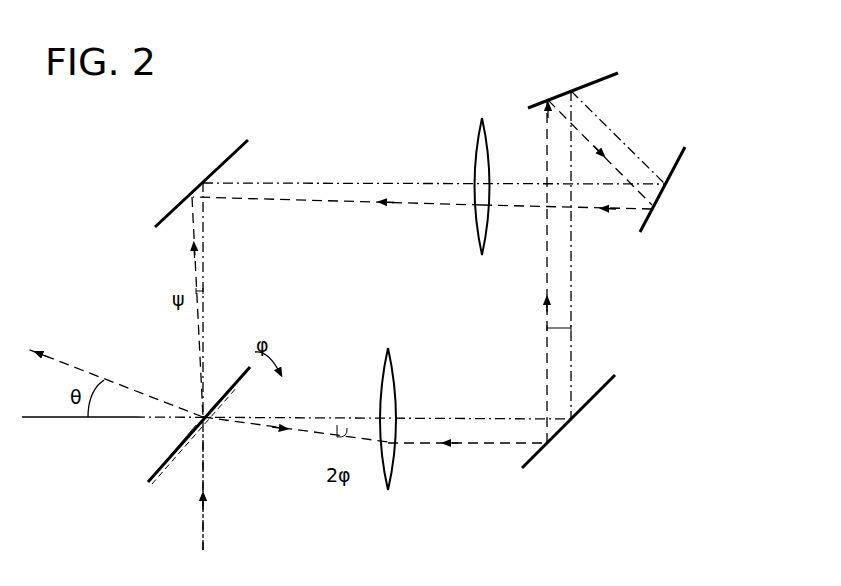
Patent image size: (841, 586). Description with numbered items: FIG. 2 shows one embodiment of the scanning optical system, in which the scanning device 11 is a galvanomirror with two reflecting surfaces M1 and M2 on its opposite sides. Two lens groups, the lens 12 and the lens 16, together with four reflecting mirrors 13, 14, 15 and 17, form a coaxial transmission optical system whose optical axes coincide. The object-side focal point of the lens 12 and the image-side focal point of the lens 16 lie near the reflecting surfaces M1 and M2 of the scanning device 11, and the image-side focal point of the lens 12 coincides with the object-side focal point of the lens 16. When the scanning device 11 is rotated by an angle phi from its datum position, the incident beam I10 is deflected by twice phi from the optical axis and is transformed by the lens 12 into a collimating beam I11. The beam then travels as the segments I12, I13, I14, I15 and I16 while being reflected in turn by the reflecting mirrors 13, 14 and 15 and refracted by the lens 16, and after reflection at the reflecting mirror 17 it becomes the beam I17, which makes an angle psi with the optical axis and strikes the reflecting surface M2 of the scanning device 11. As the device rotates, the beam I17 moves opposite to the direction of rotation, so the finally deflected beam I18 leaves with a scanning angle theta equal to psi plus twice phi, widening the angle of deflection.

The scanning device 11 is at (168, 455).
The lens 12 is at (395, 366).
The reflecting mirror 13 is at (600, 392).
The reflecting mirror 14 is at (598, 78).
The reflecting mirror 15 is at (680, 154).
The lens 16 is at (478, 130).
The reflecting mirror 17 is at (236, 150).
The reflecting surface M1 is at (245, 380).
The reflecting surface M2 is at (175, 447).
The incident beam I10 is at (205, 520).
The collimating beam I11 is at (297, 432).
The ray from lens 12 to mirror 13 I12 is at (473, 446).
The ray from mirror 13 to mirror 14 I13 is at (545, 289).
The ray from mirror 14 to mirror 15 I14 is at (590, 142).
The ray from mirror 15 to lens 16 I15 is at (590, 212).
The ray from lens 16 to mirror 17 I16 is at (312, 208).
The beam I17 is at (192, 240).
The finally deflected beam I18 is at (100, 383).